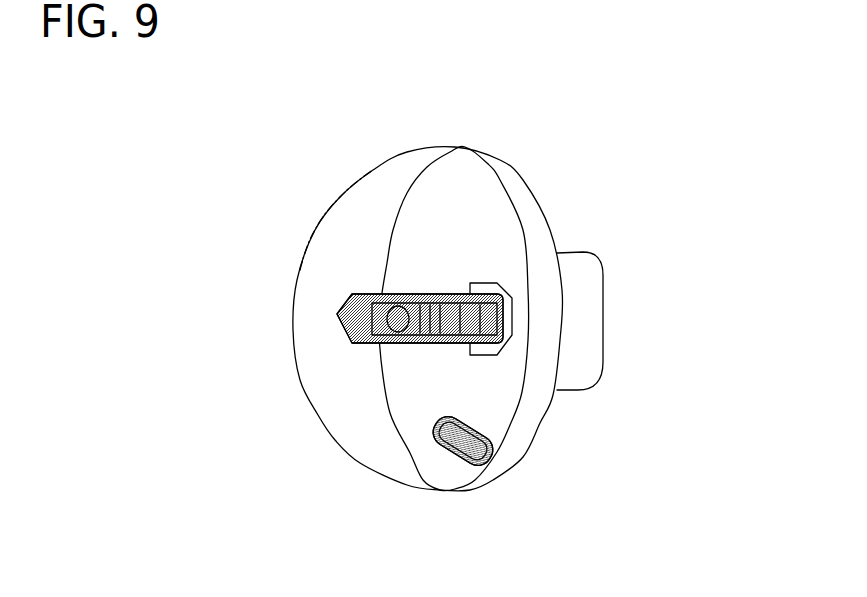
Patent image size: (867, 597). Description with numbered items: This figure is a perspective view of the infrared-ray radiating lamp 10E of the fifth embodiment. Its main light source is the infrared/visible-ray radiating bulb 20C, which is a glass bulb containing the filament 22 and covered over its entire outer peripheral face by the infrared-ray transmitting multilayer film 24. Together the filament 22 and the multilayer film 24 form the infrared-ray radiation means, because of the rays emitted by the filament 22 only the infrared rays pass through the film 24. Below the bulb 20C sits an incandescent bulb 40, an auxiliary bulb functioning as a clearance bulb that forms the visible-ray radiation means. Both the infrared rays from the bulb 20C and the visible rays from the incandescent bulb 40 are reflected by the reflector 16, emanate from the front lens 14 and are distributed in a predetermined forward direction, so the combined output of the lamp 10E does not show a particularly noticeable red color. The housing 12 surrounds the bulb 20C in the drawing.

The infrared-ray radiating lamp 10E is at (435, 314).
The housing 12 is at (540, 190).
The front lens 14 is at (319, 213).
The reflector 16 is at (478, 147).
The infrared/visible-ray radiating bulb 20C is at (366, 280).
The filament 22 is at (413, 340).
The infrared-ray transmitting multilayer film 24 is at (440, 293).
The incandescent bulb 40 is at (445, 468).